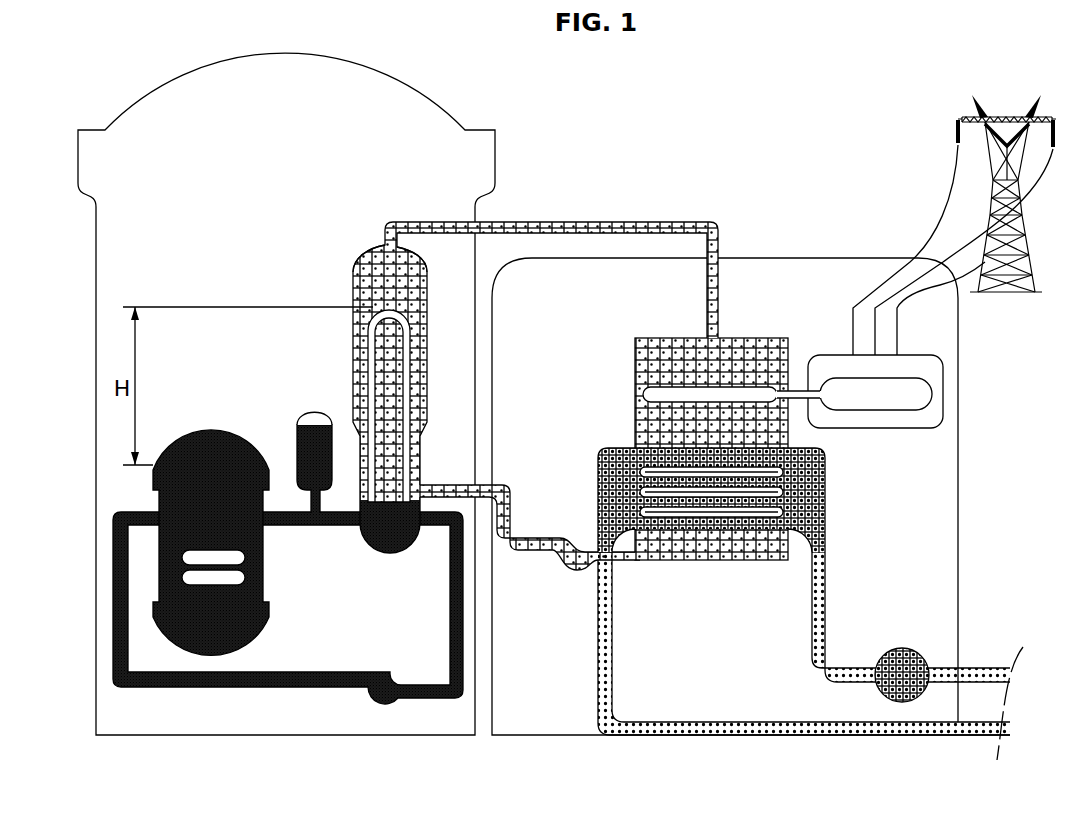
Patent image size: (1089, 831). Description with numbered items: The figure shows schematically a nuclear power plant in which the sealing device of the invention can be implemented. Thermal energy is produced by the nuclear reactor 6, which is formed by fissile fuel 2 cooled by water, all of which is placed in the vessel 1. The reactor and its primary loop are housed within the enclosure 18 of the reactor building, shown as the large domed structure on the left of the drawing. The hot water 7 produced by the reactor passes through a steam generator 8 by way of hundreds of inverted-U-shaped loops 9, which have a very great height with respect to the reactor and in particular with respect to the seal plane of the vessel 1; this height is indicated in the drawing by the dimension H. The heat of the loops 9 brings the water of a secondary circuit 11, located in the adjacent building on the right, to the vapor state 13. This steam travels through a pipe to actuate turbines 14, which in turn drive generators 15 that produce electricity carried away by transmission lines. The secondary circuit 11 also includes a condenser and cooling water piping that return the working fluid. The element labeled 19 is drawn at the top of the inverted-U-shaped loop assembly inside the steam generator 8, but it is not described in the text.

The vessel 1 is at (266, 571).
The fissile fuel 2 is at (212, 579).
The nuclear reactor 6 is at (126, 487).
The hot water 7 is at (287, 526).
The steam generator 8 is at (366, 252).
The inverted-U-shaped loops 9 is at (364, 378).
The secondary circuit 11 is at (712, 768).
The vapor state 13 is at (393, 262).
The turbines 14 is at (682, 319).
The generators 15 is at (877, 436).
The enclosure of the reactor building 18 is at (297, 169).
The riser tube 19 is at (404, 309).